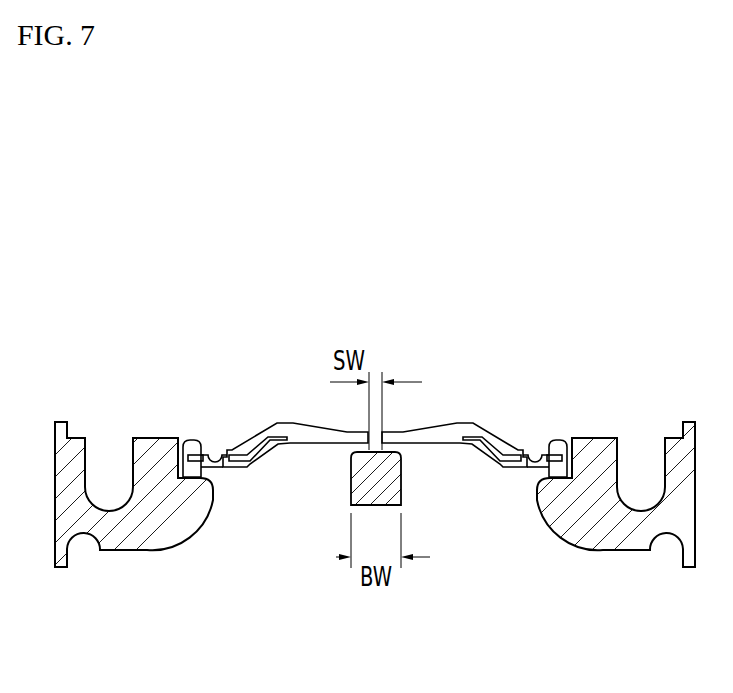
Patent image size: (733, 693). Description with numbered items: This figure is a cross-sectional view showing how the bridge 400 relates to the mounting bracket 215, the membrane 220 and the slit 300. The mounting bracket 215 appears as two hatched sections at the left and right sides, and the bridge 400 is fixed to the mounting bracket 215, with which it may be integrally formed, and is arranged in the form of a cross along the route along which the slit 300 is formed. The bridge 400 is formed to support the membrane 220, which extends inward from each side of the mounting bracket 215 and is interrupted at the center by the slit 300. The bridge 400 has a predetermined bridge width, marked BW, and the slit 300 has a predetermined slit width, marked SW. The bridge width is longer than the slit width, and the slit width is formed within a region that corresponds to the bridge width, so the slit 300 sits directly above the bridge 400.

The mounting bracket 215 is at (127, 540).
The membrane 220 is at (279, 422).
The slit 300 is at (385, 428).
The bridge 400 is at (355, 488).